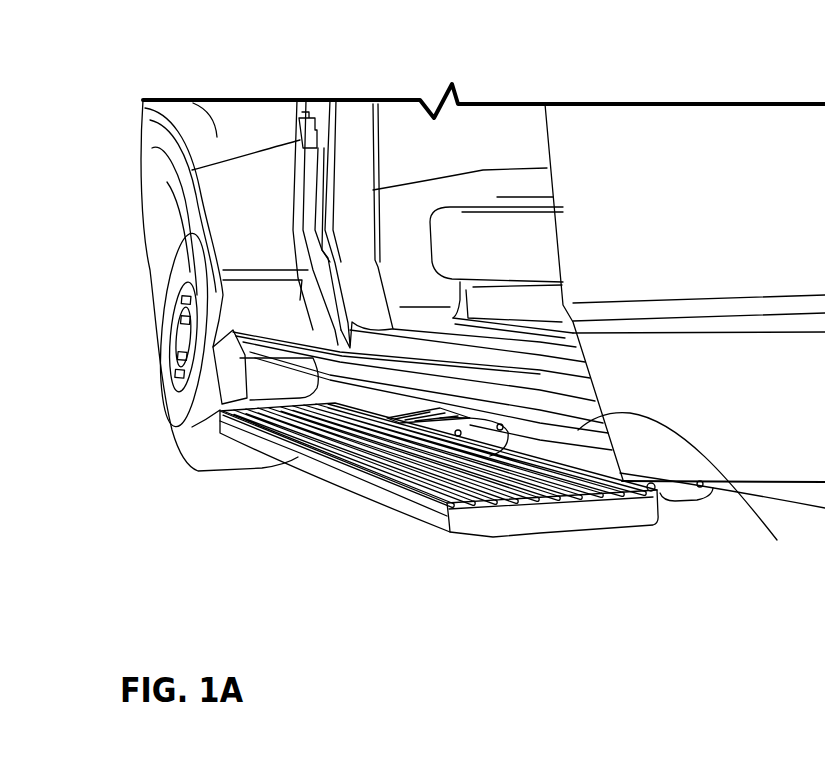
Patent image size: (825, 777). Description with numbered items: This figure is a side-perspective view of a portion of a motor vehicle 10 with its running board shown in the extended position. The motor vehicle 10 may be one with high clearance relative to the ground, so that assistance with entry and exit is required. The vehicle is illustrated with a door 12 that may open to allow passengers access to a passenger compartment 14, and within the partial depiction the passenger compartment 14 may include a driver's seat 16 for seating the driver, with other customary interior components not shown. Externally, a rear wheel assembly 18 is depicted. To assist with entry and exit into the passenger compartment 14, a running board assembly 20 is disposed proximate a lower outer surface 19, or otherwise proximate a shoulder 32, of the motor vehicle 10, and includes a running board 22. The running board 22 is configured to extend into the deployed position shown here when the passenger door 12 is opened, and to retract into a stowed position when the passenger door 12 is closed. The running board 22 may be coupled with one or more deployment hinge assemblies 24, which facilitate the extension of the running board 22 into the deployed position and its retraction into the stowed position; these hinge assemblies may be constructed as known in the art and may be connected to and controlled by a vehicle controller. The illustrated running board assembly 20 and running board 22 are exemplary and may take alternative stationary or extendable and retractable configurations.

The motor vehicle 10 is at (567, 84).
The door 12 is at (710, 167).
The passenger compartment 14 is at (406, 166).
The driver's seat 16 is at (495, 232).
The rear wheel assembly 18 is at (152, 281).
The lower outer surface 19 is at (557, 440).
The running board assembly 20 is at (439, 520).
The running board 22 is at (492, 525).
The deployment hinge assembly 24 is at (673, 492).
The shoulder 32 is at (684, 491).